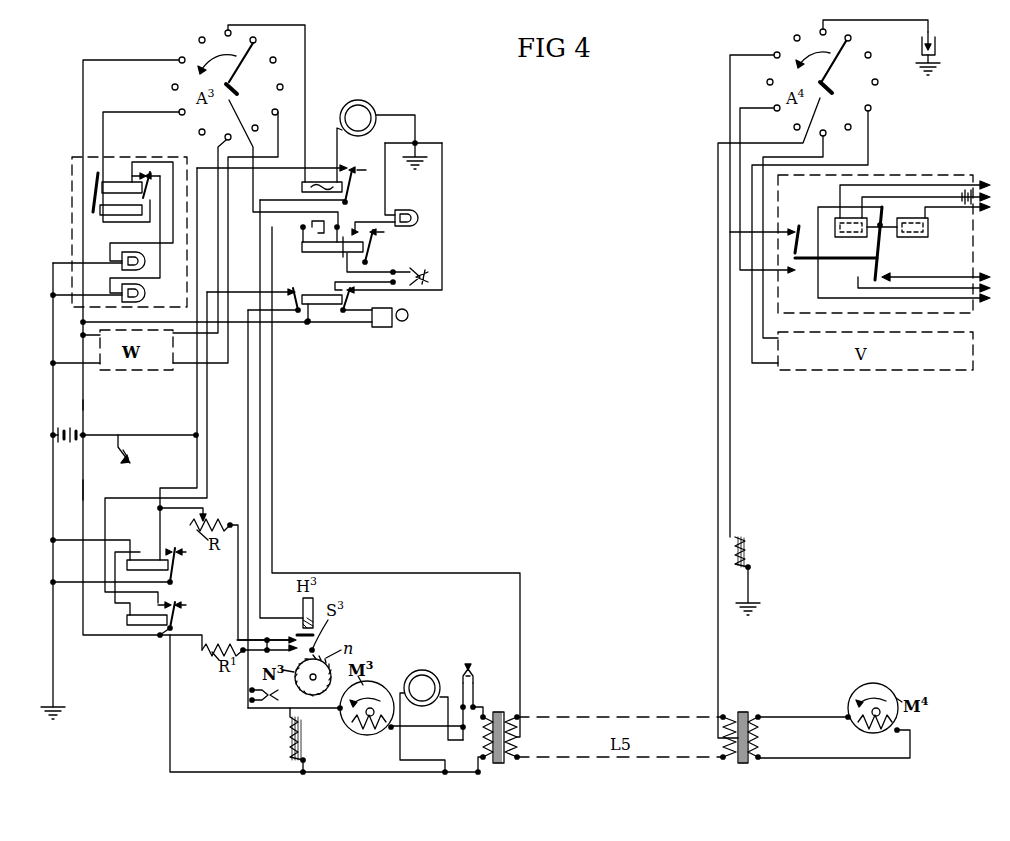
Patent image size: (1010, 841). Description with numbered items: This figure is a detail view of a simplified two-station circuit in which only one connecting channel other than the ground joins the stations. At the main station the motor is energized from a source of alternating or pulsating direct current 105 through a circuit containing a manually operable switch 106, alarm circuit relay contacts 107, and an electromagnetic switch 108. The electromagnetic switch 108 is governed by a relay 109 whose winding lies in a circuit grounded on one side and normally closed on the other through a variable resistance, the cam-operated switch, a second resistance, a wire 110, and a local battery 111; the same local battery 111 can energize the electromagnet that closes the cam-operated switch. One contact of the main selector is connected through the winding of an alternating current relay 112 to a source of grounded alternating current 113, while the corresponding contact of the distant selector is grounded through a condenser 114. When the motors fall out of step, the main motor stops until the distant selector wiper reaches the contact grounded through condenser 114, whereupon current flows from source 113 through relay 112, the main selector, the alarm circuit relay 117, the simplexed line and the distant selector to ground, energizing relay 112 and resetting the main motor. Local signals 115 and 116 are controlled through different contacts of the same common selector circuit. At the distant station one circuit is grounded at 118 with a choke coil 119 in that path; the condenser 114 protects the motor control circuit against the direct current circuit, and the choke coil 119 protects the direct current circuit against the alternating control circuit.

The source of alternating or pulsating direct current 105 is at (410, 676).
The manually operable switch 106 is at (250, 695).
The alarm circuit relay contacts 107 is at (350, 300).
The electromagnetic switch 108 is at (176, 621).
The relay 109 is at (178, 568).
The wire 110 is at (86, 405).
The local battery 111 is at (63, 425).
The alternating current relay 112 is at (350, 166).
The source of grounded alternating current 113 is at (377, 121).
The condenser 114 is at (948, 53).
The signal 115 is at (146, 263).
The signal 116 is at (146, 293).
The alarm circuit relay 117 is at (370, 246).
The ground 118 is at (762, 608).
The choke coil 119 is at (750, 553).